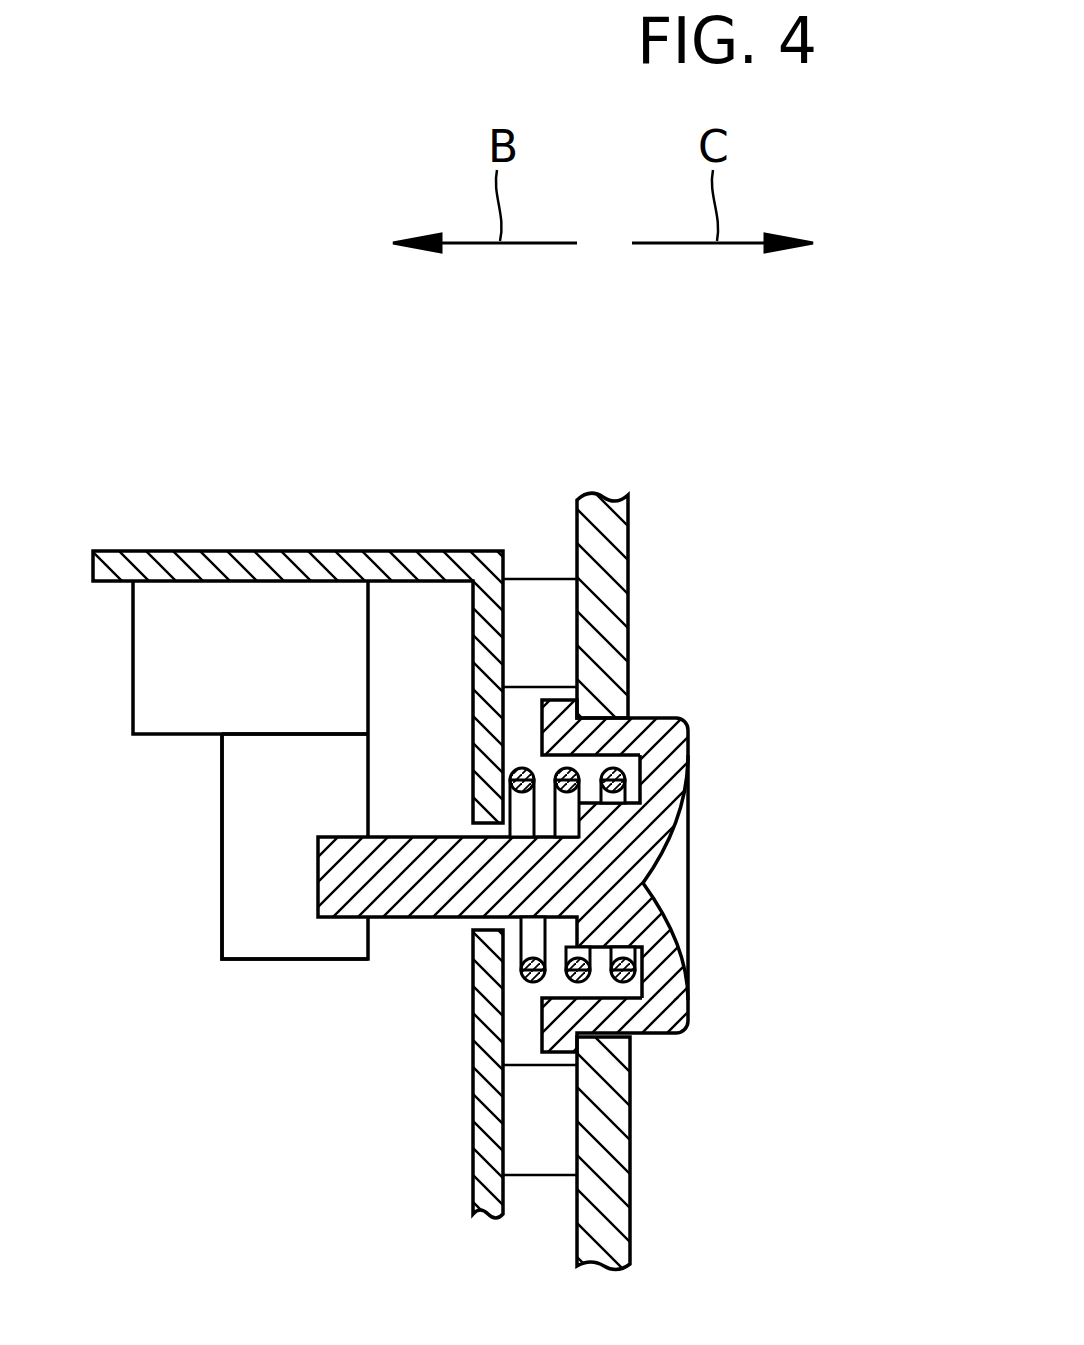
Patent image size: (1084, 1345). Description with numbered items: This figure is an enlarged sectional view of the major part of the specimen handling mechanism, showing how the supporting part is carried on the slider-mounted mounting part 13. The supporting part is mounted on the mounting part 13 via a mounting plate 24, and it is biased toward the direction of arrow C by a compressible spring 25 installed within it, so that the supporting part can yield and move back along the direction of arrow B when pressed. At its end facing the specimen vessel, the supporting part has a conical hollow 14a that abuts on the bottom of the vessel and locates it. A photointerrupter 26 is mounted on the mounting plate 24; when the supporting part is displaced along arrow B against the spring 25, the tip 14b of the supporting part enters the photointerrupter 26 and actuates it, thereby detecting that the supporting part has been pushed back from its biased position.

The mounting part 13 is at (607, 540).
The conical hollow 14a is at (673, 898).
The tip 14b is at (348, 896).
The mounting plate 24 is at (355, 552).
The compressible spring 25 is at (530, 980).
The photointerrupter 26 is at (260, 812).